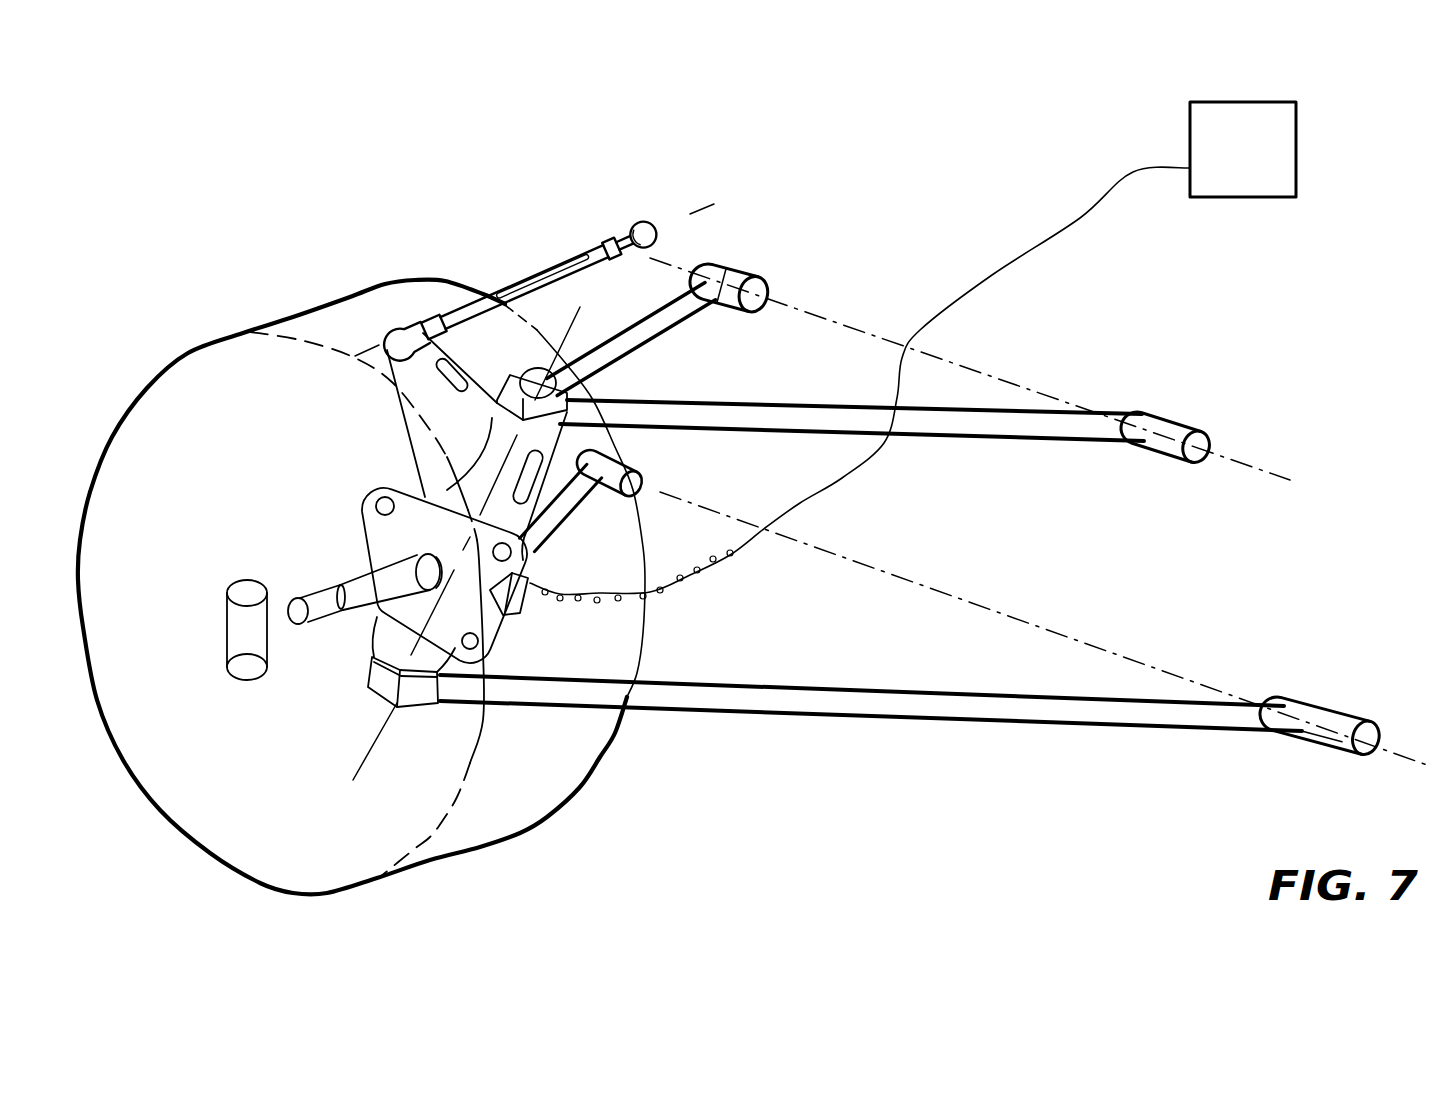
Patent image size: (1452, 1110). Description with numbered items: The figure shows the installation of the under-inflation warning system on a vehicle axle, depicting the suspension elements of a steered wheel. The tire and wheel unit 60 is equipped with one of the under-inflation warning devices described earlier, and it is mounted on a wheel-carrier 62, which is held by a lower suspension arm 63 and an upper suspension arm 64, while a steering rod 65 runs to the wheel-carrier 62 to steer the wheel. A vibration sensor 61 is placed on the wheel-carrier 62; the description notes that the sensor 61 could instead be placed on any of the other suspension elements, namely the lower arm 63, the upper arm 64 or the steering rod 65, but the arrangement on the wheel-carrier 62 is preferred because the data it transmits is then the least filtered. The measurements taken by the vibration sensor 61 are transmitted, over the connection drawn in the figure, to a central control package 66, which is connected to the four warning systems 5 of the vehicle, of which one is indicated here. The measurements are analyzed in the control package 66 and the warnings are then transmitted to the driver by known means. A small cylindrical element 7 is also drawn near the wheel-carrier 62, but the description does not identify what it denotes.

The warning system 5 is at (588, 171).
The sensor 7 is at (247, 623).
The tire and wheel unit 60 is at (198, 378).
The vibration sensor 61 is at (524, 598).
The wheel-carrier 62 is at (368, 530).
The lower suspension arm 63 is at (573, 510).
The upper suspension arm 64 is at (696, 302).
The steering rod 65 is at (527, 279).
The central control package 66 is at (1243, 125).